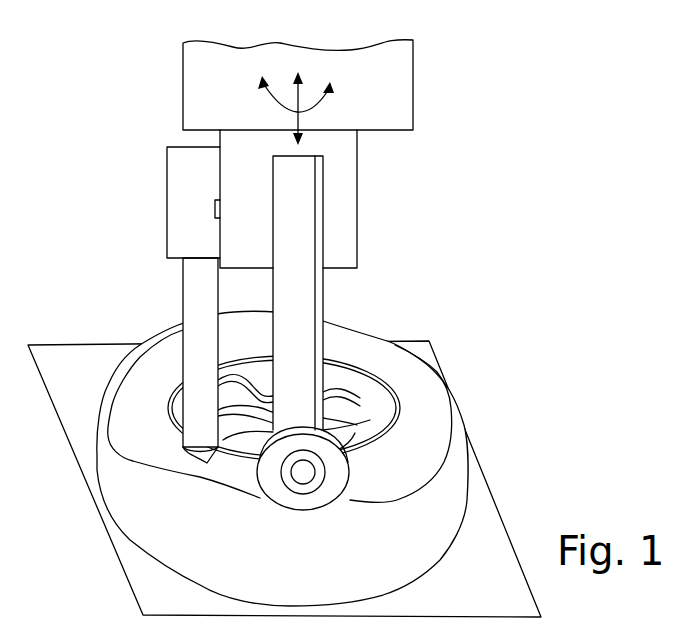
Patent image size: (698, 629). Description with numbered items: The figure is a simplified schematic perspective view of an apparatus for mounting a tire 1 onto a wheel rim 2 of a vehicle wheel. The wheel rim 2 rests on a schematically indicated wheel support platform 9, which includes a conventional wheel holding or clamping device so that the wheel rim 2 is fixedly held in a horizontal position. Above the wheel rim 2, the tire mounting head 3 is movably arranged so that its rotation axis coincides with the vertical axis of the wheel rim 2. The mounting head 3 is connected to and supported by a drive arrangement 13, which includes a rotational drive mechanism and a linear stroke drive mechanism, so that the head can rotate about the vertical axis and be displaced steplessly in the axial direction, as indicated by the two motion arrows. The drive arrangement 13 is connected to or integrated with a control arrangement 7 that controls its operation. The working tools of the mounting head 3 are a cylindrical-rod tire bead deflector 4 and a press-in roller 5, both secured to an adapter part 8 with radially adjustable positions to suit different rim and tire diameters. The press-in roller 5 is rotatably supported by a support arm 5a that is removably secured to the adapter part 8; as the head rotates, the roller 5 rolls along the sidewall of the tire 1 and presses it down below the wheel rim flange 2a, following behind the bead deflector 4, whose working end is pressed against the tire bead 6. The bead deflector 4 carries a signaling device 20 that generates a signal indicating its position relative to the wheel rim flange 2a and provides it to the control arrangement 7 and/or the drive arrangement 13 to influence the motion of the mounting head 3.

The tire 1 is at (422, 397).
The wheel rim 2 is at (364, 383).
The wheel rim flange 2a is at (390, 452).
The tire mounting head 3 is at (312, 83).
The tire bead deflector 4 is at (197, 292).
The press-in roller 5 is at (330, 439).
The support arm 5a is at (323, 292).
The tire bead 6 is at (197, 462).
The control arrangement 7 is at (213, 75).
The adapter part 8 is at (357, 213).
The wheel support platform 9 is at (482, 550).
The drive arrangement 13 is at (207, 62).
The signaling device 20 is at (150, 176).